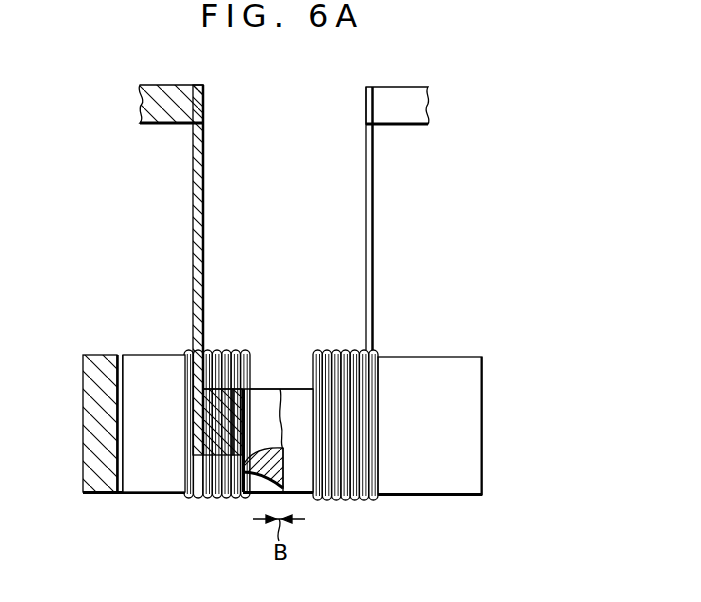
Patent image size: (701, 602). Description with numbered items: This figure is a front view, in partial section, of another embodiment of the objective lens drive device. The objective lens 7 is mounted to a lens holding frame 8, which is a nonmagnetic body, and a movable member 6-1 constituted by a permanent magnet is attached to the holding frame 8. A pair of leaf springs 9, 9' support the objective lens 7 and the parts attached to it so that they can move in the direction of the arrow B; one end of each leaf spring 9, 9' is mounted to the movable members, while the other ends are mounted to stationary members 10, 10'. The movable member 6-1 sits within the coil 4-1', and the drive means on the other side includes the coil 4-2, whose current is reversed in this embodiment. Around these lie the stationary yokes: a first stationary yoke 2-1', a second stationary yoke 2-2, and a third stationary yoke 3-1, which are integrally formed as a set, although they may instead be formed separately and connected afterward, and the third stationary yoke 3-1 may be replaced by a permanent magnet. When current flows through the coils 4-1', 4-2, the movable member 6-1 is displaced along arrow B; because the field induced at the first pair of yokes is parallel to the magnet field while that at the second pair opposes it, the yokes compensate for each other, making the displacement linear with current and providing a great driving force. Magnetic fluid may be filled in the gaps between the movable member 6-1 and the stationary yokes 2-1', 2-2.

The stationary yoke 2-1' is at (152, 402).
The stationary yoke 2-2 is at (437, 372).
The third stationary yoke 3-1 is at (83, 408).
The coil 4-1' is at (191, 447).
The first coil 4-2 is at (357, 500).
The movable member 6-1 is at (200, 428).
The objective lens 7 is at (258, 440).
The lens holding frame 8 is at (243, 496).
The leaf spring 9 is at (176, 270).
The leaf spring 9' is at (394, 218).
The stationary member 10 is at (145, 104).
The stationary member 10' is at (431, 106).